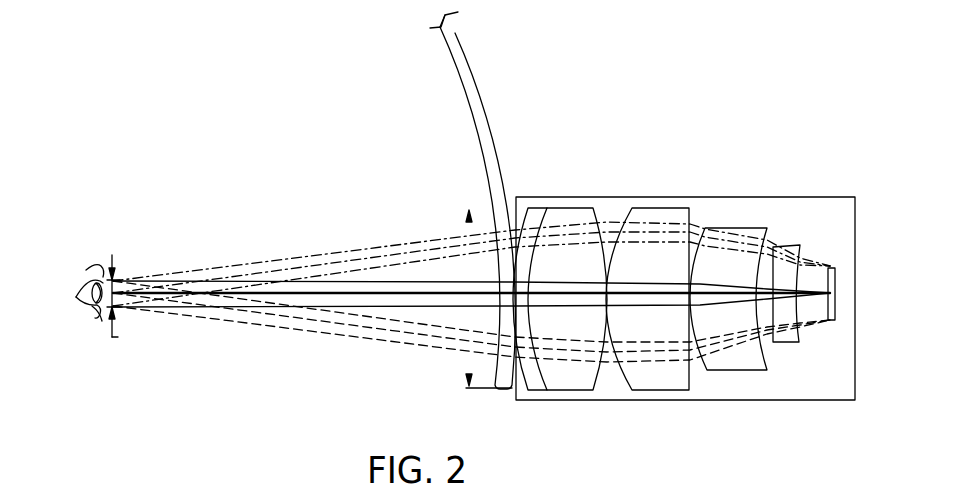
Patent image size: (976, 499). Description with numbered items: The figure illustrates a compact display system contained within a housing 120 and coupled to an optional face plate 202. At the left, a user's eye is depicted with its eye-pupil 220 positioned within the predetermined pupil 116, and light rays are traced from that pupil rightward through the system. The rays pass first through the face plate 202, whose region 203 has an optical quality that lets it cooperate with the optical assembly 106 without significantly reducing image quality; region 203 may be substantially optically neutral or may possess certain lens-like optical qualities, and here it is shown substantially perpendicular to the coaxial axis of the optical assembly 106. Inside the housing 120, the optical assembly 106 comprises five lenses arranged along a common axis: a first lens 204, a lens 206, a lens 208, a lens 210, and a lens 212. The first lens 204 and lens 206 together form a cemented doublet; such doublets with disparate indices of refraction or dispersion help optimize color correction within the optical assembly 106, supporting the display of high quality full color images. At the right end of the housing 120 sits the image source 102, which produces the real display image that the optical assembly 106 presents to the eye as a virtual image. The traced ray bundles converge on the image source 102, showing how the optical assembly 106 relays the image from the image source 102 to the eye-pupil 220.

The image source 102 is at (836, 308).
The optical assembly 106 is at (857, 158).
The predetermined pupil 116 is at (134, 301).
The housing 120 is at (777, 400).
The face plate 202 is at (472, 76).
The region of face plate 203 is at (470, 325).
The first lens 204 is at (539, 208).
The lens 206 is at (579, 208).
The lens 208 is at (659, 208).
The lens 210 is at (740, 228).
The lens 212 is at (785, 247).
The eye-pupil 220 is at (84, 311).